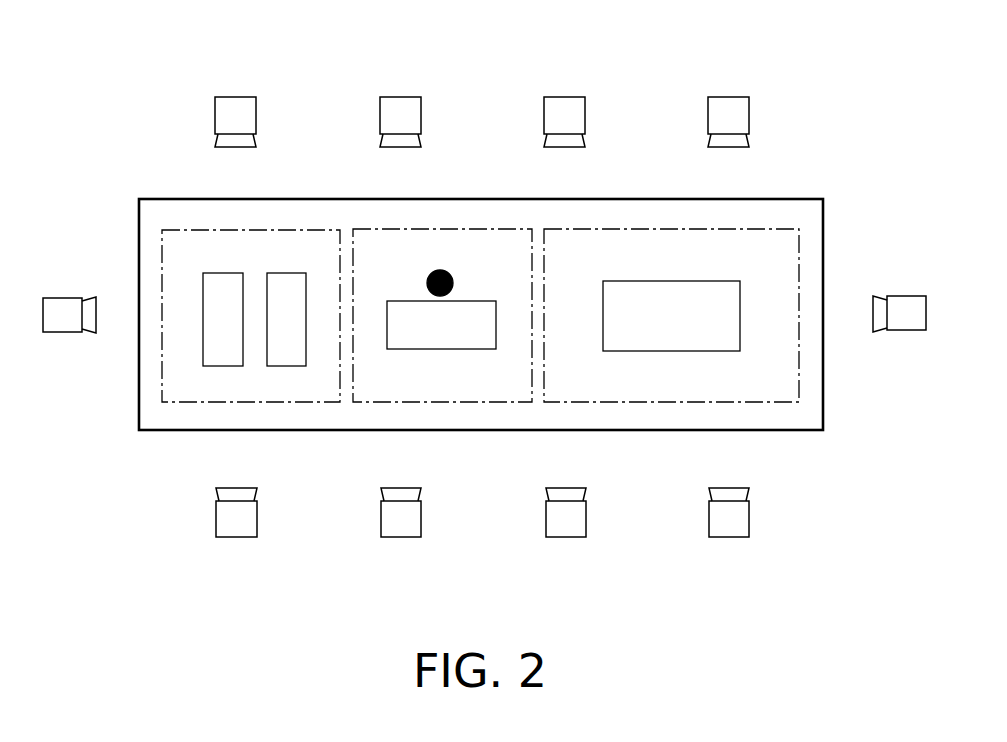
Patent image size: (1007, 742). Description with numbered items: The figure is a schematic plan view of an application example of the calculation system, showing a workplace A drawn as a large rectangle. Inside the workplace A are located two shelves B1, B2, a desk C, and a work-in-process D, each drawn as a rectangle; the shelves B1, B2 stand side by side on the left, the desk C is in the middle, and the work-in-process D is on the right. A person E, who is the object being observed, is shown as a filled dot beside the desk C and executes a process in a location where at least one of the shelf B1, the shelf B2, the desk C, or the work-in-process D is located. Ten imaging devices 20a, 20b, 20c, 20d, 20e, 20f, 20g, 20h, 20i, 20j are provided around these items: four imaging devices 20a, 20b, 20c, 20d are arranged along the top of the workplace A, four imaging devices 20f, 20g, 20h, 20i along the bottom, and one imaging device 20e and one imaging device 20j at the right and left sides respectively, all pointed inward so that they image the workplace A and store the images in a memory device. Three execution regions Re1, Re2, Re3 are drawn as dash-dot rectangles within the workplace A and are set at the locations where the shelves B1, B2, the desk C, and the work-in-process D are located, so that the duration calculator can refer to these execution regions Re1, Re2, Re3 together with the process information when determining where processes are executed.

The workplace A is at (155, 198).
The execution region Re1 is at (303, 229).
The execution region Re2 is at (494, 228).
The execution region Re3 is at (767, 228).
The shelf B1 is at (222, 350).
The shelf B2 is at (284, 350).
The desk C is at (417, 328).
The work-in-process D is at (673, 327).
The person E is at (454, 293).
The imaging device 20a is at (237, 112).
The imaging device 20b is at (402, 112).
The imaging device 20c is at (566, 112).
The imaging device 20d is at (730, 112).
The imaging device 20e is at (905, 305).
The imaging device 20f is at (727, 527).
The imaging device 20g is at (564, 527).
The imaging device 20h is at (400, 527).
The imaging device 20i is at (235, 527).
The imaging device 20j is at (63, 305).